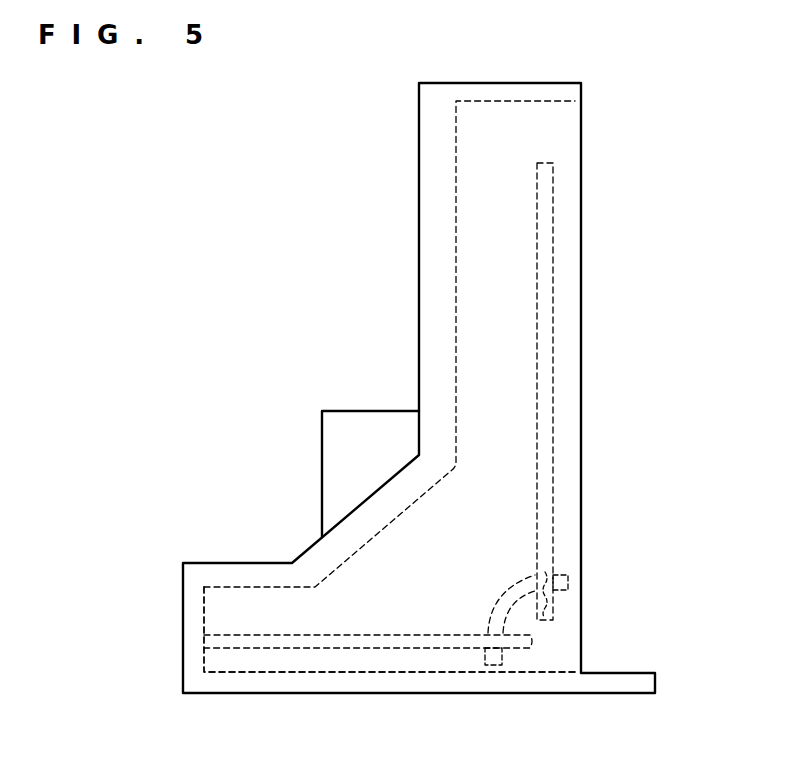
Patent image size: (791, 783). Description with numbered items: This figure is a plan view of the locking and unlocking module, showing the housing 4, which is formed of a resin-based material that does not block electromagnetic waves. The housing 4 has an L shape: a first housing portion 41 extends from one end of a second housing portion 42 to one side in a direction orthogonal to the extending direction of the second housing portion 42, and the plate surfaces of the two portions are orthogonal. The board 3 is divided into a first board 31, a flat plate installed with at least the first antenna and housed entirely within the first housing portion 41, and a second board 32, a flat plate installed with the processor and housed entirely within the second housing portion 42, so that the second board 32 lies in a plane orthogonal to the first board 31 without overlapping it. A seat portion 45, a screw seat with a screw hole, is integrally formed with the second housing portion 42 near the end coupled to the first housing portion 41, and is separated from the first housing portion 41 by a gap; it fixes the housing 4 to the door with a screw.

The housing 4 is at (418, 173).
The first housing portion 41 is at (233, 612).
The second housing portion 42 is at (545, 136).
The seat portion 45 is at (342, 434).
The board 3 is at (462, 618).
The first board 31 is at (533, 642).
The second board 32 is at (557, 605).